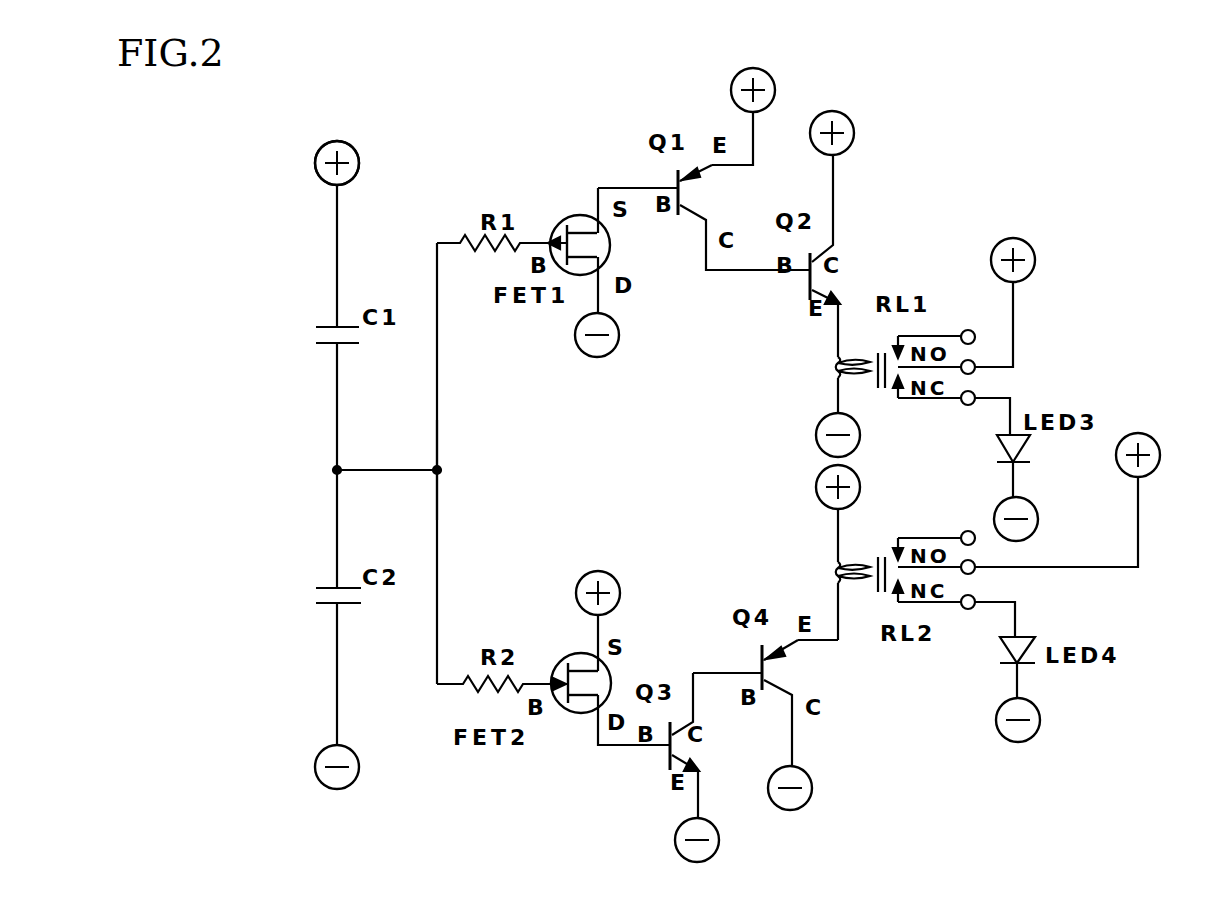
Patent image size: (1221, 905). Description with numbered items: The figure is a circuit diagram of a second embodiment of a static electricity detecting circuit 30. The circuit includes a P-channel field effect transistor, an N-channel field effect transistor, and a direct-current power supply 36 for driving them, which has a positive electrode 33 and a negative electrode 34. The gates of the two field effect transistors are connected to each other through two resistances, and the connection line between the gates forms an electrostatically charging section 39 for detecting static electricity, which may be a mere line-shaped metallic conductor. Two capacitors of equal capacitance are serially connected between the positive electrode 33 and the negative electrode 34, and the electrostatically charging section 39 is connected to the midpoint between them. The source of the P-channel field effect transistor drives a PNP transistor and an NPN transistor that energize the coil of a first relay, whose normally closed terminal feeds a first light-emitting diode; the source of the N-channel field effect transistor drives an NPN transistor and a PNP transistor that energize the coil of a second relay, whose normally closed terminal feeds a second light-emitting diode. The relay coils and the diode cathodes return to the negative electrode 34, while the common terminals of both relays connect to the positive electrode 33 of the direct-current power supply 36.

The static electricity detecting circuit 30 is at (967, 190).
The positive electrode 33 is at (761, 341).
The negative electrode 34 is at (702, 587).
The direct-current power supply 36 is at (345, 143).
The electrostatically charging section 39 is at (433, 452).